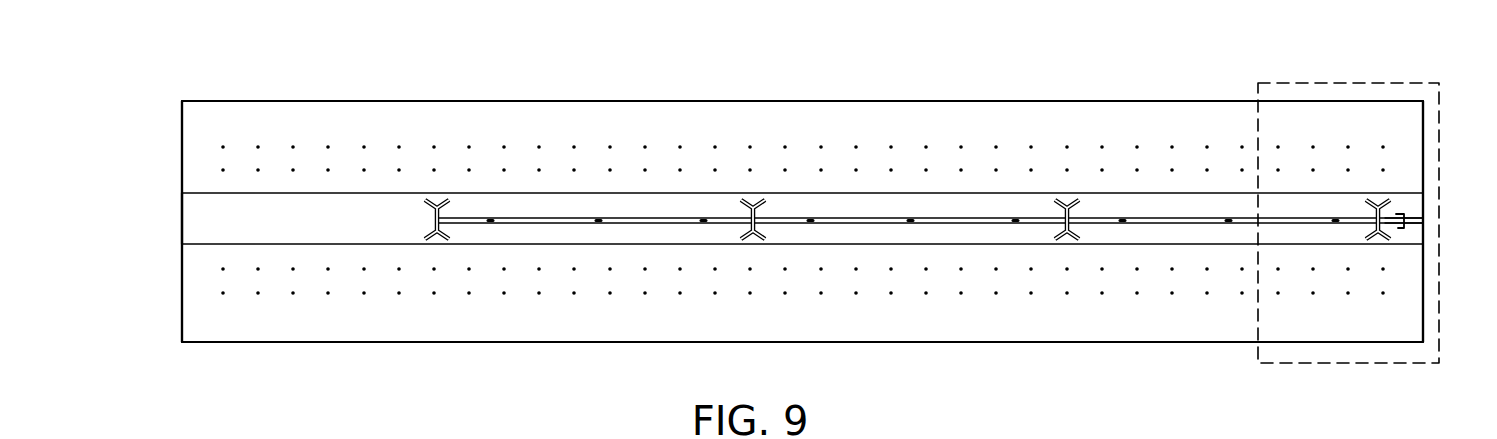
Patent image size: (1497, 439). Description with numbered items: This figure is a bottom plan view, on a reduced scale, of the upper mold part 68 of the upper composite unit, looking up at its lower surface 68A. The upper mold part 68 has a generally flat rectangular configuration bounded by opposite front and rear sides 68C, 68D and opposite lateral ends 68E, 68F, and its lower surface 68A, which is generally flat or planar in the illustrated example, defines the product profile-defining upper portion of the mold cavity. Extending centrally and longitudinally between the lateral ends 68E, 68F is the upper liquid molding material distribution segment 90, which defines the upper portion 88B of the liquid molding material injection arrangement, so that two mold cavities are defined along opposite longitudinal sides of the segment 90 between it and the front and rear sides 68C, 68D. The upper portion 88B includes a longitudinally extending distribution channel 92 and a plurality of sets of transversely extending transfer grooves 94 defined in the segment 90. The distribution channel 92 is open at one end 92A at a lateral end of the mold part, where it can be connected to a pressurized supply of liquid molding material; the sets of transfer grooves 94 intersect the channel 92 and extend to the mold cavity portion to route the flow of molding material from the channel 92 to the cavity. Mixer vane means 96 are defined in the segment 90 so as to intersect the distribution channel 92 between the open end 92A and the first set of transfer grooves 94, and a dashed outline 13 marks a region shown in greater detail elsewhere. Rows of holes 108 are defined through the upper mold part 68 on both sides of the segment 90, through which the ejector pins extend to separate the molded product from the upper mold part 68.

The detail region 13 is at (1295, 83).
The upper mold part 68 is at (1063, 98).
The lower surface 68A is at (922, 130).
The front side 68C is at (662, 101).
The rear side 68D is at (488, 342).
The lateral end 68E is at (1423, 280).
The lateral end 68F is at (182, 292).
The upper portion of liquid molding material injection arrangement 88B is at (876, 252).
The upper liquid molding material distribution segment 90 is at (182, 212).
The distribution channel 92 is at (985, 222).
The open end 92A is at (1412, 217).
The transfer grooves 94 is at (437, 200).
The mixer vane means 96 is at (1400, 229).
The holes 108 is at (400, 170).